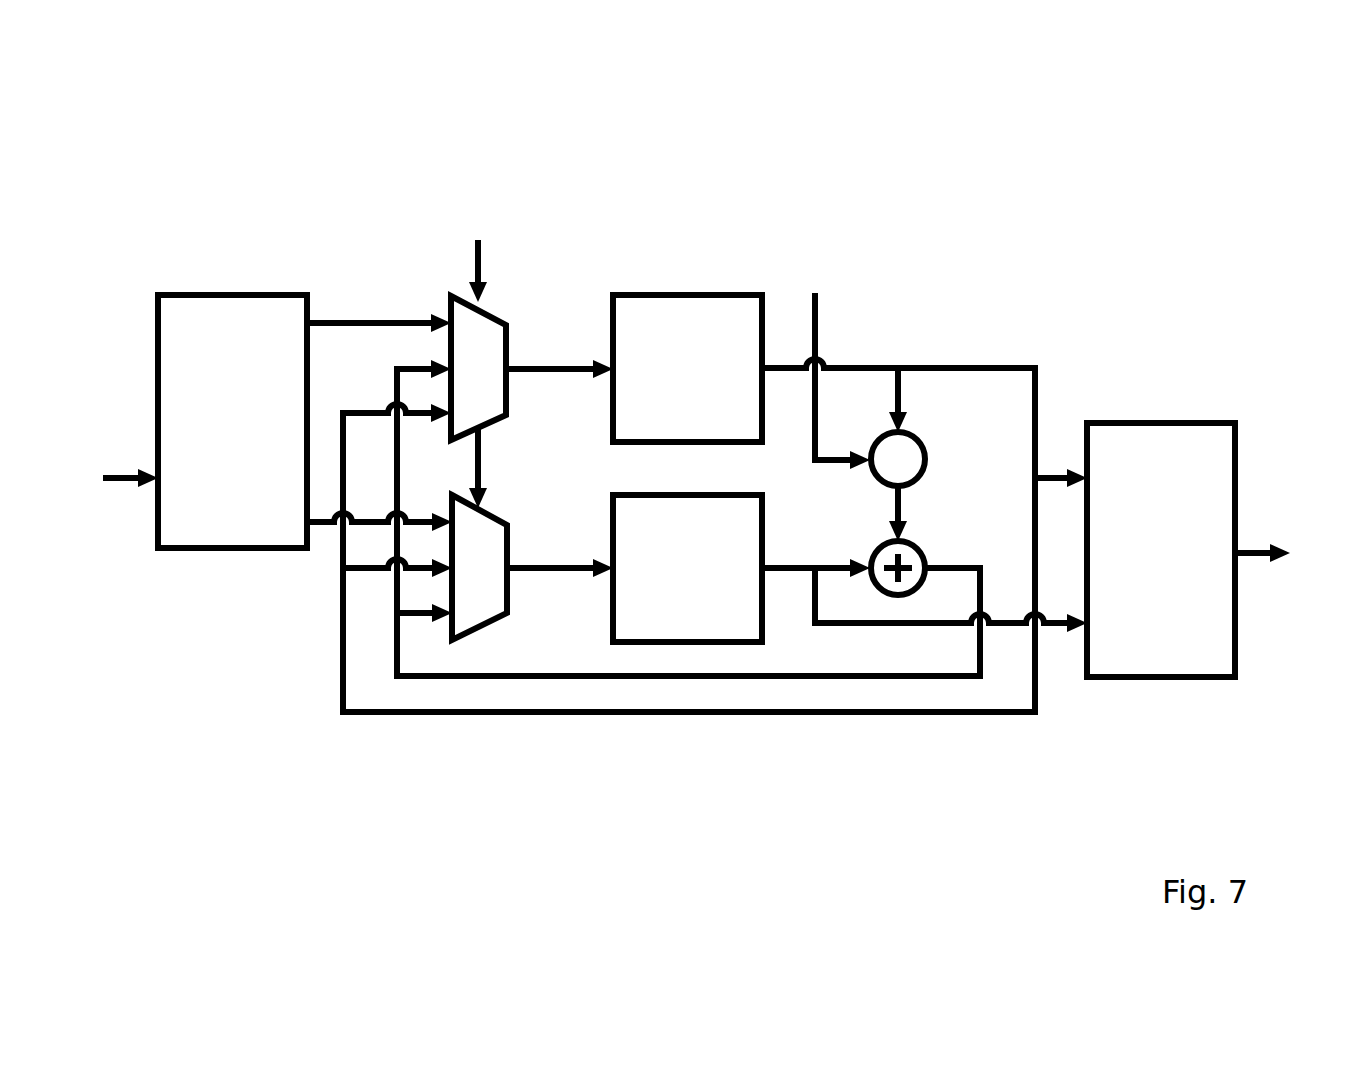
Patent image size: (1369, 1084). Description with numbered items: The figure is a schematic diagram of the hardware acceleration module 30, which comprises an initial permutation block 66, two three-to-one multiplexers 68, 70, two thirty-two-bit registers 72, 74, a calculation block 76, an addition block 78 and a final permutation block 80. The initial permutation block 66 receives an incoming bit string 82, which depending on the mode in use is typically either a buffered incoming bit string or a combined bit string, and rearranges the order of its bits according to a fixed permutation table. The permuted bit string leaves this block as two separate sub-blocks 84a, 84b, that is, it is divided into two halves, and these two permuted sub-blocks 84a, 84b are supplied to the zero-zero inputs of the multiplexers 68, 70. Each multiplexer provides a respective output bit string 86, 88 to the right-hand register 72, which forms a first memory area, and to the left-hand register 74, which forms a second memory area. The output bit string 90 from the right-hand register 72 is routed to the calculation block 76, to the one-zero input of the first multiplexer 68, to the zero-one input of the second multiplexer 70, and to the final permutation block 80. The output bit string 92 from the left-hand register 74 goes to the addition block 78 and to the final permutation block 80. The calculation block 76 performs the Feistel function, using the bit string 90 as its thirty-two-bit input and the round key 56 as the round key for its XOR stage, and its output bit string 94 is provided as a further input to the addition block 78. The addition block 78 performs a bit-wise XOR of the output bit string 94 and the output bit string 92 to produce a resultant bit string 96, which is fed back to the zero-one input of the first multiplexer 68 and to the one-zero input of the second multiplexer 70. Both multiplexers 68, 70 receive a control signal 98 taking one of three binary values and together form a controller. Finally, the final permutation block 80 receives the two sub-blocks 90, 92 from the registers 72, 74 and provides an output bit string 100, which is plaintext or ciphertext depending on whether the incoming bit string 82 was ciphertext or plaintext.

The hardware acceleration module 30 is at (245, 166).
The round key 56 is at (833, 362).
The initial permutation block 66 is at (214, 442).
The first multiplexer 68 is at (495, 320).
The second multiplexer 70 is at (498, 518).
The right-hand register 72 is at (668, 385).
The left-hand register 74 is at (668, 585).
The calculation block 76 is at (922, 442).
The addition block 78 is at (922, 547).
The final permutation block 80 is at (1143, 574).
The incoming bit string 82 is at (105, 478).
The first permuted sub-block 84a is at (347, 320).
The second permuted sub-block 84b is at (317, 525).
The first multiplexer output bit string 86 is at (548, 365).
The second multiplexer output bit string 88 is at (548, 565).
The right-hand register output bit string 90 is at (958, 362).
The left-hand register output bit string 92 is at (785, 565).
The calculation block output bit string 94 is at (900, 508).
The resultant bit string 96 is at (802, 673).
The control signal 98 is at (483, 448).
The output bit string 100 is at (1292, 553).